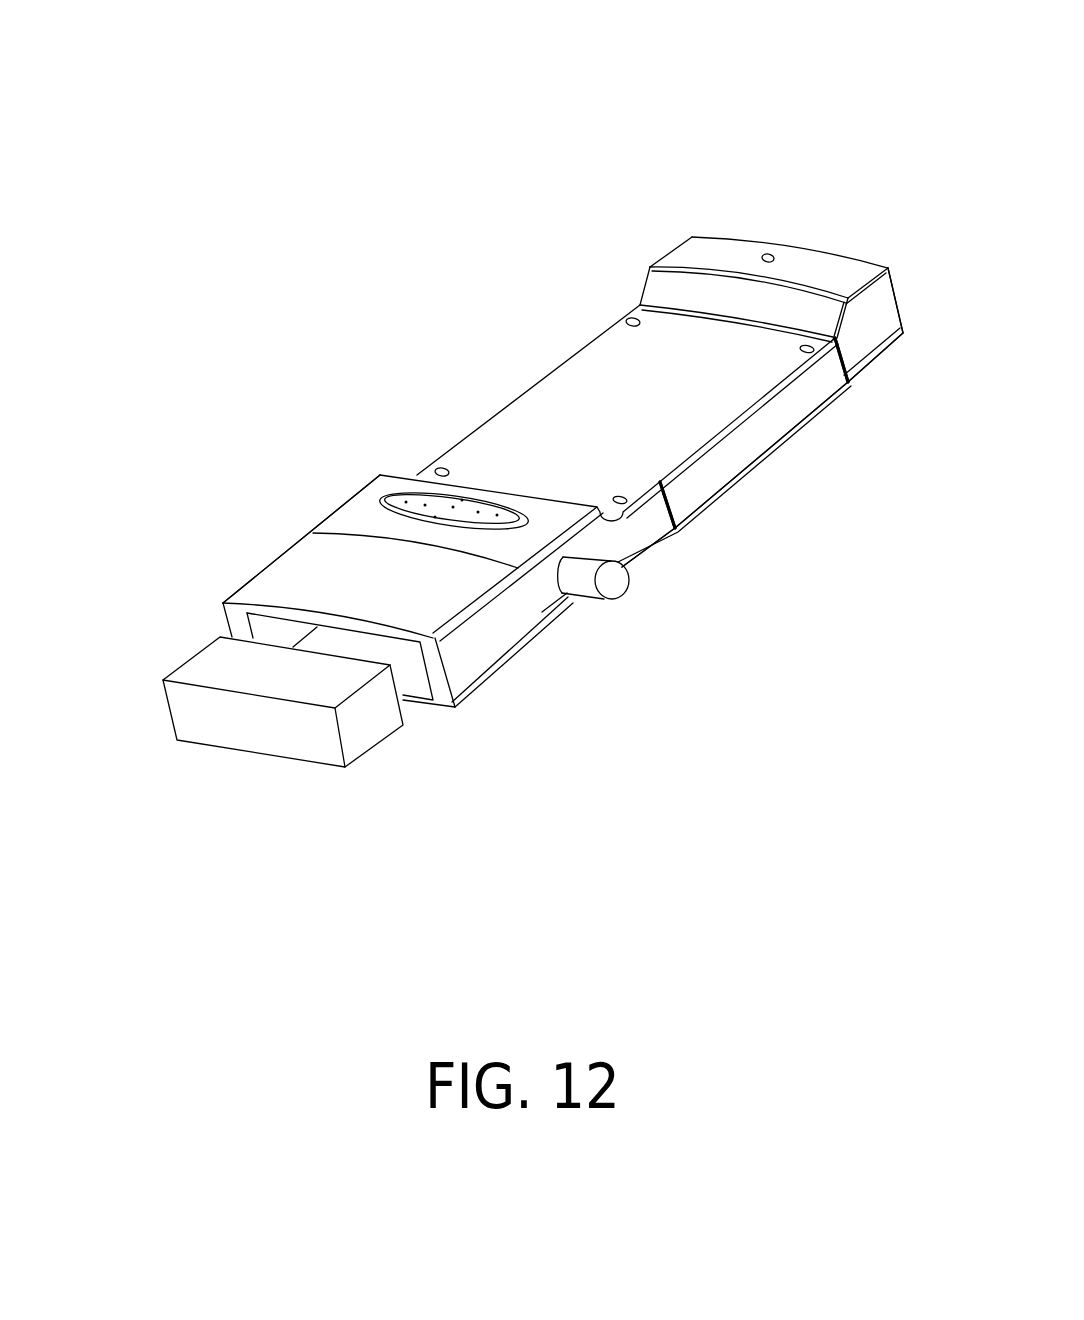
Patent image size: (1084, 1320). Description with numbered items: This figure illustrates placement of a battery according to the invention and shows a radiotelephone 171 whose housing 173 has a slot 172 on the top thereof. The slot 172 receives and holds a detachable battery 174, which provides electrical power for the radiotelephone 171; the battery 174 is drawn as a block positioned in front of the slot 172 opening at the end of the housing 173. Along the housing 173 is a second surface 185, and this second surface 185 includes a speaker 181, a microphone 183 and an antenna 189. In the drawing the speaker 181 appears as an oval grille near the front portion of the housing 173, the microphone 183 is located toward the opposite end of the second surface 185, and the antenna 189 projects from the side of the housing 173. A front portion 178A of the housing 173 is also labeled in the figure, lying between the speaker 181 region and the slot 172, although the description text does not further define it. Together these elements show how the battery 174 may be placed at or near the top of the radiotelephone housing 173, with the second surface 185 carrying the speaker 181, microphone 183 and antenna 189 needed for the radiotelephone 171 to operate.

The radiotelephone 171 is at (514, 401).
The slot 172 is at (406, 660).
The housing 173 is at (592, 546).
The detachable battery 174 is at (223, 718).
The front sloped housing portion 178A is at (300, 570).
The speaker 181 is at (427, 500).
The microphone 183 is at (771, 256).
The second surface 185 is at (603, 251).
The antenna 189 is at (580, 587).